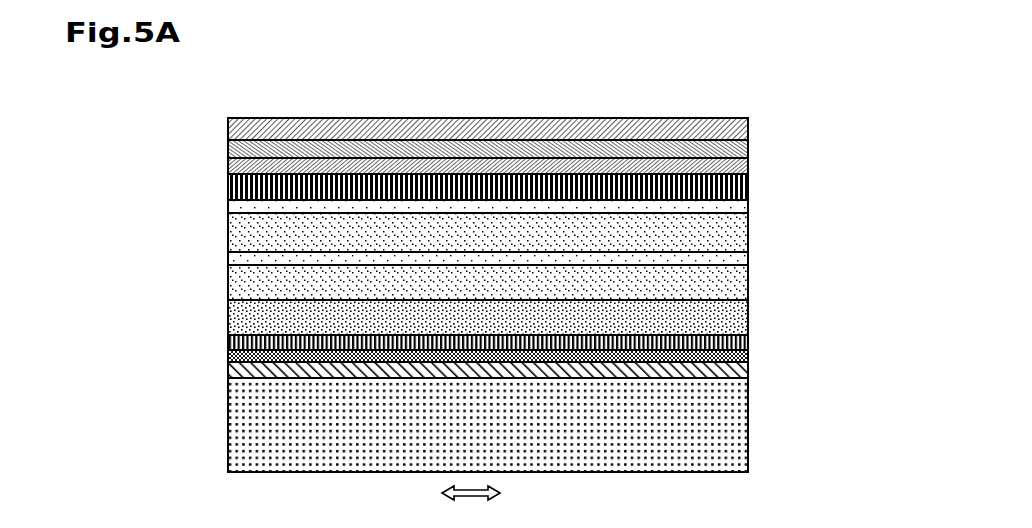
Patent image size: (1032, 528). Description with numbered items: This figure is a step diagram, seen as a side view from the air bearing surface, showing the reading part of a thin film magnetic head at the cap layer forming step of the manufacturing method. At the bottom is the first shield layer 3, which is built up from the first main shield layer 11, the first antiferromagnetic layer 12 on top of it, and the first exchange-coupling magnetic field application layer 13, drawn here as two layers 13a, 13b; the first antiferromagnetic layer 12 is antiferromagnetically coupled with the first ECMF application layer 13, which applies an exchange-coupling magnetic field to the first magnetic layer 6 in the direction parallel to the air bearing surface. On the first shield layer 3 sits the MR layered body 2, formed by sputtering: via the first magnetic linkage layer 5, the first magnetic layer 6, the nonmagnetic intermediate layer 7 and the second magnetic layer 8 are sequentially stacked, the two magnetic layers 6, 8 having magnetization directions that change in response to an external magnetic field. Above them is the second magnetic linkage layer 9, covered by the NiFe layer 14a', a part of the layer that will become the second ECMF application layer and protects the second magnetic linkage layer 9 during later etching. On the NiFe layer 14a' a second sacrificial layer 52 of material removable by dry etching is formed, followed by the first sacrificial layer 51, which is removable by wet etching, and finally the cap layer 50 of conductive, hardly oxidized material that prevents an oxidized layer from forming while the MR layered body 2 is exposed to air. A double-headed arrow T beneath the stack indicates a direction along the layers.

The cap layer 50 is at (228, 128).
The first sacrificial layer 51 is at (228, 149).
The second sacrificial layer 52 is at (228, 167).
The NiFe layer 14a' is at (446, 187).
The second magnetic linkage layer 9 is at (748, 209).
The second magnetic layer 8 is at (748, 238).
The nonmagnetic intermediate layer 7 is at (748, 260).
The first magnetic layer 6 is at (748, 287).
The first magnetic linkage layer 5 is at (547, 314).
The MR layered body 2 is at (568, 261).
The upper sublayer of electrode 13b is at (228, 341).
The lower sublayer of electrode 13a is at (228, 356).
The first exchange-coupling magnetic field application layer 13 is at (425, 342).
The first antiferromagnetic layer 12 is at (228, 372).
The first main shield layer 11 is at (228, 440).
The first shield layer 3 is at (407, 397).
The thickness direction T is at (471, 504).